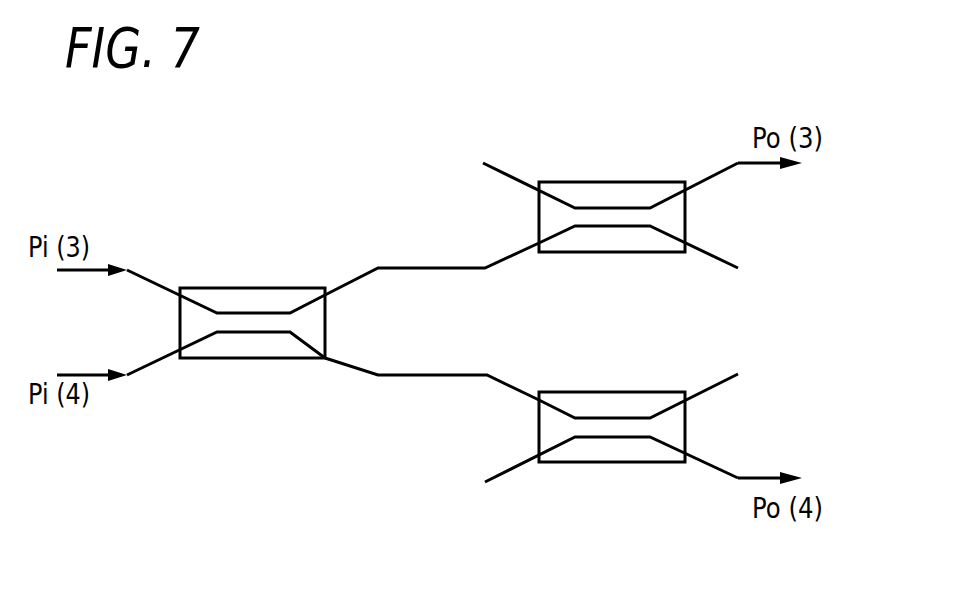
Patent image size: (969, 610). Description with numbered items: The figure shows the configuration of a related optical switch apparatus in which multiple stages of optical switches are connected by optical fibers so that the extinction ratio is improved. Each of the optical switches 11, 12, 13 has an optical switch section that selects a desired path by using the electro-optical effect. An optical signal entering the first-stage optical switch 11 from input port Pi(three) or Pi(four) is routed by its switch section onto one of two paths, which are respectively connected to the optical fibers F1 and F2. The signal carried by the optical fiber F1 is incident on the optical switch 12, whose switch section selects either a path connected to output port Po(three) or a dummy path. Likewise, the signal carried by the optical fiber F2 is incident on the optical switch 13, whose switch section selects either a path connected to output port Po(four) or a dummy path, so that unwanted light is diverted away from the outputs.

The optical switch 11 is at (253, 287).
The optical switch 12 is at (613, 182).
The optical switch 13 is at (610, 462).
The optical fiber F1 is at (398, 268).
The optical fiber F2 is at (410, 375).